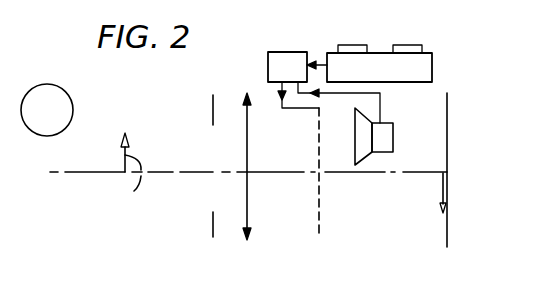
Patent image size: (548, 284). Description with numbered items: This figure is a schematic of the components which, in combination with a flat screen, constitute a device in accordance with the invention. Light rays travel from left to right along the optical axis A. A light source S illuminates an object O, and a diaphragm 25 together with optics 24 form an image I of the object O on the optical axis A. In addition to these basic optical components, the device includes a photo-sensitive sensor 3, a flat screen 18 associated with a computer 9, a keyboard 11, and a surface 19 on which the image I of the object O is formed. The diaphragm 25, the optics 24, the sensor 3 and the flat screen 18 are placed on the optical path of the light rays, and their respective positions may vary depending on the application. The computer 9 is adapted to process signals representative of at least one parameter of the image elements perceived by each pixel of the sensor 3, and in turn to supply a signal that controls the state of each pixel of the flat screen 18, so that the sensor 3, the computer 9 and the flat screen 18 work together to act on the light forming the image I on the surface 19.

The light source S is at (47, 110).
The optical axis A is at (75, 172).
The object O is at (133, 183).
The diaphragm 25 is at (213, 212).
The optics 24 is at (248, 214).
The flat screen 18 is at (320, 218).
The computer 9 is at (324, 87).
The keyboard 11 is at (369, 63).
The photo-sensitive sensor 3 is at (374, 136).
The surface 19 is at (447, 122).
The image I is at (443, 200).